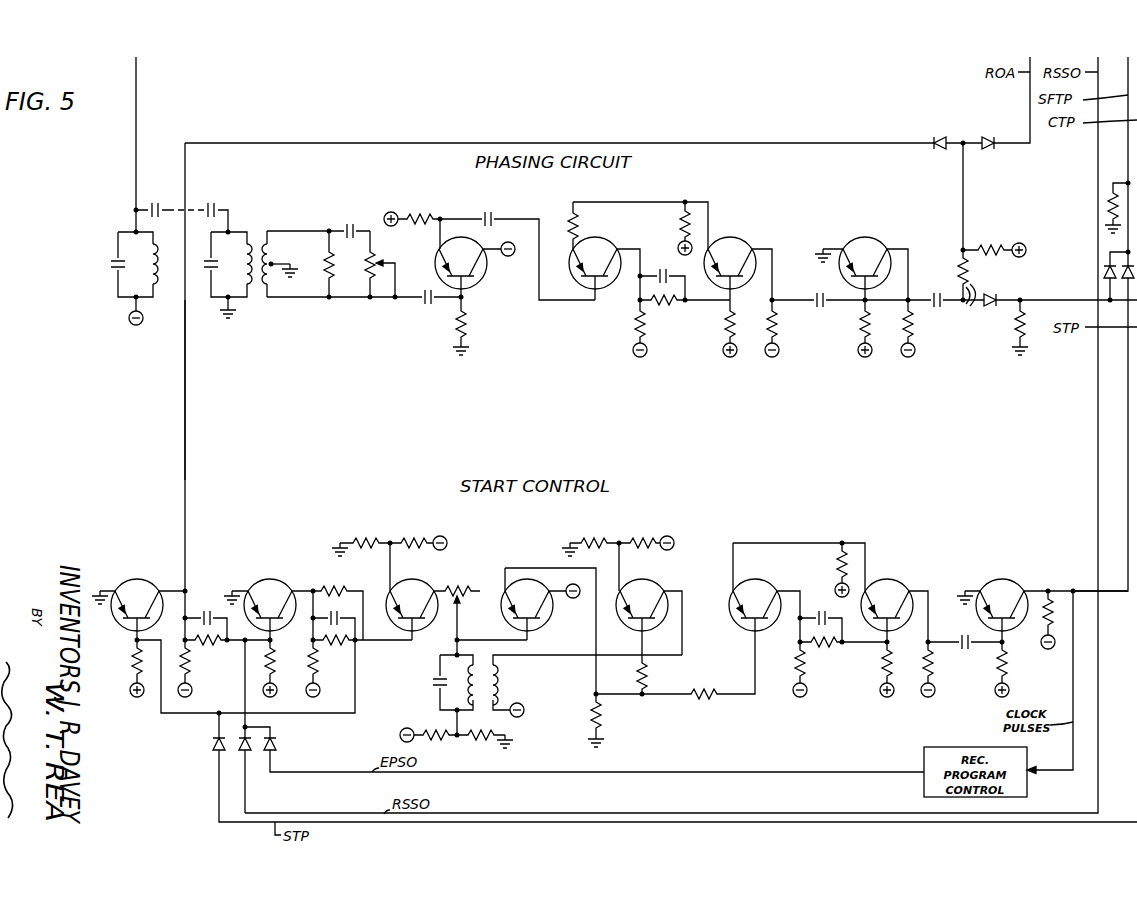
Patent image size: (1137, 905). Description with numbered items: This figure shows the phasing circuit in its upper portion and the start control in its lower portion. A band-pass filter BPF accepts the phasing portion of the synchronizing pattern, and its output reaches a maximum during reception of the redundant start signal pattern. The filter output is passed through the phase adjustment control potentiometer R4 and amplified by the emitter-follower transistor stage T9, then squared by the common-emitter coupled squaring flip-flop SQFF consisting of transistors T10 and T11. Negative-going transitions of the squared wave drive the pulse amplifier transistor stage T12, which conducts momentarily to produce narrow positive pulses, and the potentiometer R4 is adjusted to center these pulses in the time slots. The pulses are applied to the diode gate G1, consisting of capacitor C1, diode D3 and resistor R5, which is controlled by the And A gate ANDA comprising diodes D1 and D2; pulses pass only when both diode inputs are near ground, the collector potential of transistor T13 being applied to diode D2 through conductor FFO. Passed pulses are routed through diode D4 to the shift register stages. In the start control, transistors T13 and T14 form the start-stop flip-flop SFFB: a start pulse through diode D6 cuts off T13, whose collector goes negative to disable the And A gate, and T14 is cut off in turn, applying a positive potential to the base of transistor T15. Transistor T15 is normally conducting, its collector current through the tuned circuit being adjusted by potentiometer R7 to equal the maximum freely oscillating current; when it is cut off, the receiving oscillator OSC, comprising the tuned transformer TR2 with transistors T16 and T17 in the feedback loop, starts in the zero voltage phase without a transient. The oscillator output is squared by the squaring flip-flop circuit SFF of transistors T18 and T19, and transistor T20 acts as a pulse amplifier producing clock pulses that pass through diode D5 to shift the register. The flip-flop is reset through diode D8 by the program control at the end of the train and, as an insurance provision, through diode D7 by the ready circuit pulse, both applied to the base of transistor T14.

The emitter-follower transistor stage T9 is at (478, 240).
The transistor T10 is at (618, 240).
The transistor T11 is at (730, 256).
The pulse amplifier transistor stage T12 is at (888, 240).
The transistor T13 is at (138, 588).
The transistor T14 is at (259, 604).
The transistor T15 is at (430, 576).
The transistor T16 is at (538, 588).
The transistor T17 is at (641, 581).
The transistor T18 is at (757, 582).
The transistor T19 is at (887, 595).
The pulse amplifier T20 is at (1005, 581).
The phase adjustment control potentiometer R4 is at (379, 265).
The resistor R5 is at (957, 279).
The potentiometer R7 is at (444, 590).
The capacitor C1 is at (937, 294).
The diode gate G1 is at (966, 306).
The tuned transformer TR2 is at (489, 652).
The diode D1 is at (988, 153).
The diode D2 is at (940, 153).
The diode D3 is at (987, 295).
The diode D4 is at (1104, 273).
The diode D5 is at (1122, 280).
The diode D6 is at (212, 746).
The diode D7 is at (242, 751).
The diode D8 is at (278, 746).
The band-pass filter BPF is at (285, 203).
The squaring flip-flop SQFF is at (664, 269).
The And A gate ANDA is at (968, 141).
The start-stop flip-flop SFFB is at (252, 628).
The receiving oscillator OSC is at (658, 609).
The squaring flip-flop circuit SFF is at (857, 608).
The conductor FFO is at (185, 394).